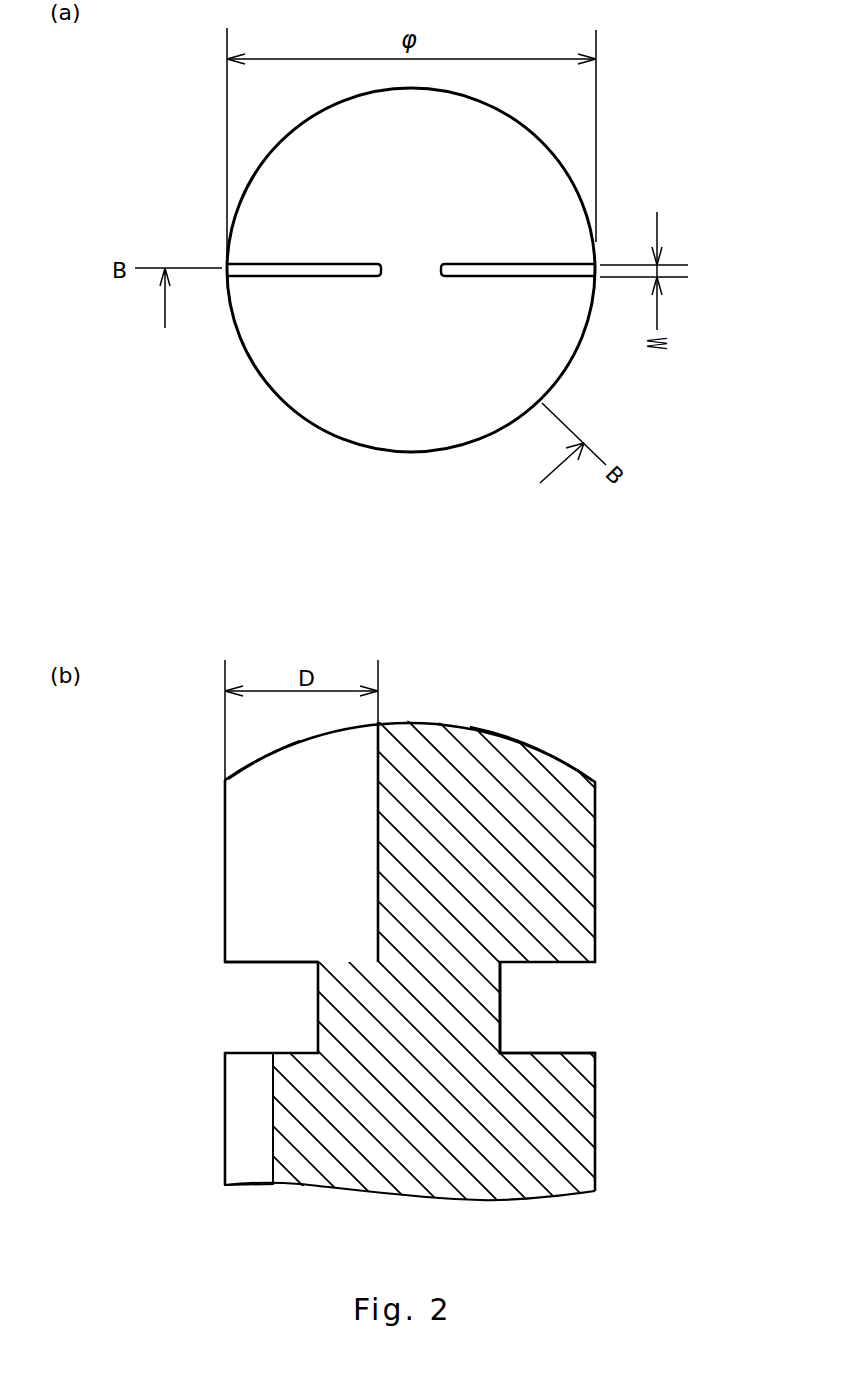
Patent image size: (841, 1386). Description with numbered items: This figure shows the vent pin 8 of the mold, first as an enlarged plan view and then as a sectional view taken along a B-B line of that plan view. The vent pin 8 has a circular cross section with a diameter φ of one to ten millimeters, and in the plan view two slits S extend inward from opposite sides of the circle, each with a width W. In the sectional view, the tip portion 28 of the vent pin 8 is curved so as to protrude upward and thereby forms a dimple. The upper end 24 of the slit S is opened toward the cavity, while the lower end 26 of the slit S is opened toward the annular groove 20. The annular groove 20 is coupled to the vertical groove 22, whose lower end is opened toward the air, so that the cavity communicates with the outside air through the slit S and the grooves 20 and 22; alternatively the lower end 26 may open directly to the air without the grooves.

The vent pin 8 is at (380, 388).
The slit S is at (486, 272).
The annular groove 20 is at (500, 1003).
The vertical groove 22 is at (243, 1127).
The upper end of the slit 24 is at (265, 752).
The lower end of the slit 26 is at (260, 962).
The tip portion 28 is at (505, 737).